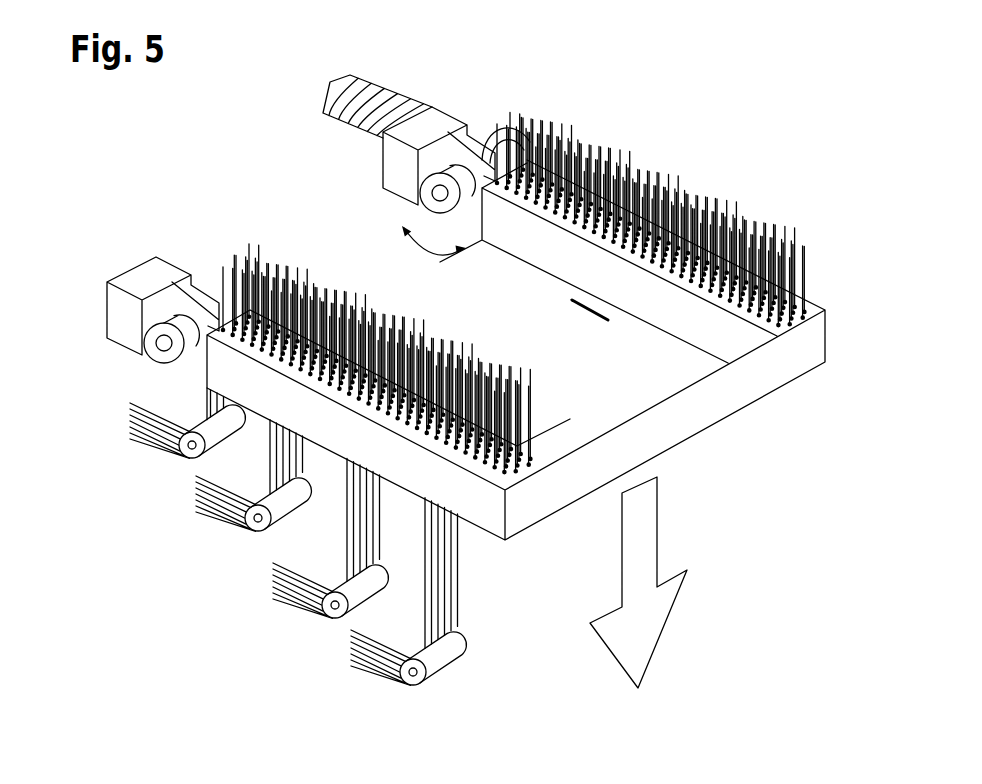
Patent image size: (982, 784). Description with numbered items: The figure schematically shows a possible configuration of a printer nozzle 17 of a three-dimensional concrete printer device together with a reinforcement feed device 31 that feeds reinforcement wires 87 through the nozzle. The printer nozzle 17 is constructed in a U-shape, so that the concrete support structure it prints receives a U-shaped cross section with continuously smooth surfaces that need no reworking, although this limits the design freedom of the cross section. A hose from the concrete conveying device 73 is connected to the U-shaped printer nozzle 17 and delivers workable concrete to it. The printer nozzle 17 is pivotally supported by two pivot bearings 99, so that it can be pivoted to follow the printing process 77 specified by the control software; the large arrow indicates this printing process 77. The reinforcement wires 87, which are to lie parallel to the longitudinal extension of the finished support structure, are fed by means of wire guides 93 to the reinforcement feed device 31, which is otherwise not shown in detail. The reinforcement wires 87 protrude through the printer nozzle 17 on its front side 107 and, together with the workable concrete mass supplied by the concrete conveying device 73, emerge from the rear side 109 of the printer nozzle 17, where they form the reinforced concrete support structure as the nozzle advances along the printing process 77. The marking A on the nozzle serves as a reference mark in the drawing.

The printer nozzle 17 is at (800, 364).
The rear side 109 is at (676, 186).
The pivot bearings 99 is at (540, 128).
The concrete conveying device 73 is at (333, 125).
The wire guides 93 is at (258, 531).
The reinforcement wires 87 is at (427, 612).
The reinforcement feed device 31 is at (233, 543).
The printing process 77 is at (648, 536).
The front side 107 is at (546, 562).
The reference mark A is at (570, 322).